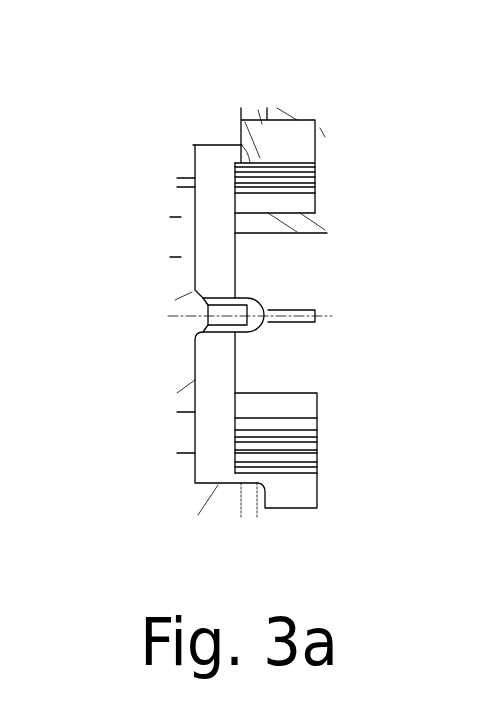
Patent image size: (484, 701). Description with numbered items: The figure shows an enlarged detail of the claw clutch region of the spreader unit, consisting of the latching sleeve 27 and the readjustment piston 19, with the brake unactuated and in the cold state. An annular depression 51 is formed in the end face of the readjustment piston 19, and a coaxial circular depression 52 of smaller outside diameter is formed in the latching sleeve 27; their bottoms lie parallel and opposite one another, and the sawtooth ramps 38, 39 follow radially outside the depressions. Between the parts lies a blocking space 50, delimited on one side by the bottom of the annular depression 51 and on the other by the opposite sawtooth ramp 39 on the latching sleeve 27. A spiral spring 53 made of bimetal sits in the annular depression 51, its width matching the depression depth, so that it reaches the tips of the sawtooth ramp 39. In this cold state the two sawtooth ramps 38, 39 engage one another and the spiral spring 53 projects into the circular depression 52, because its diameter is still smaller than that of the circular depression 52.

The readjustment piston 19 is at (318, 225).
The latching sleeve 27 is at (178, 256).
The sawtooth ramp 38 is at (257, 110).
The sawtooth ramp 39 is at (241, 145).
The blocking space 50 is at (282, 127).
The annular depression 51 is at (302, 480).
The circular depression 52 is at (202, 167).
The spiral spring 53 is at (315, 183).